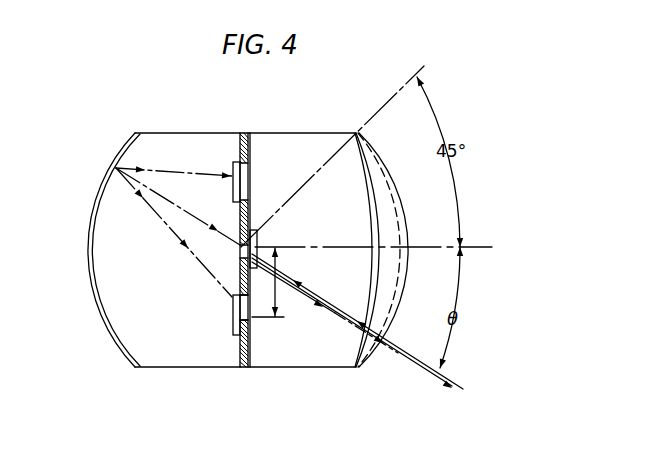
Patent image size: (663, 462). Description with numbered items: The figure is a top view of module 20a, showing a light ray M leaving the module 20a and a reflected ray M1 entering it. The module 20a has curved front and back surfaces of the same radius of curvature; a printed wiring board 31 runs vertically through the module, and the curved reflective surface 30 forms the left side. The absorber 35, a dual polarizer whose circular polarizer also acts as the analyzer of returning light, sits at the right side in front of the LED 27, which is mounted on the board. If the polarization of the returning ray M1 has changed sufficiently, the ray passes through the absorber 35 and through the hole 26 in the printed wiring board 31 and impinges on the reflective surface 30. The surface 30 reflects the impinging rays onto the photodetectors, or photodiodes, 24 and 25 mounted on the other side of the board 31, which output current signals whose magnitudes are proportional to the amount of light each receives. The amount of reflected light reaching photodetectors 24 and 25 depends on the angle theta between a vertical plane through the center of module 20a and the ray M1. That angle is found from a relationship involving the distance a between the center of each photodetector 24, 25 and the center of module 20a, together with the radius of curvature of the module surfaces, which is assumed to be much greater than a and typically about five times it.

The module 20a is at (264, 422).
The reflective surface 30 is at (120, 151).
The printed wiring board 31 is at (243, 132).
The photodetector 25 is at (234, 167).
The photodetector 24 is at (232, 318).
The hole 26 is at (232, 295).
The LED 27 is at (258, 236).
The absorber 35 is at (313, 367).
The light ray M is at (424, 371).
The reflected ray M1 is at (450, 382).
The distance a is at (277, 302).